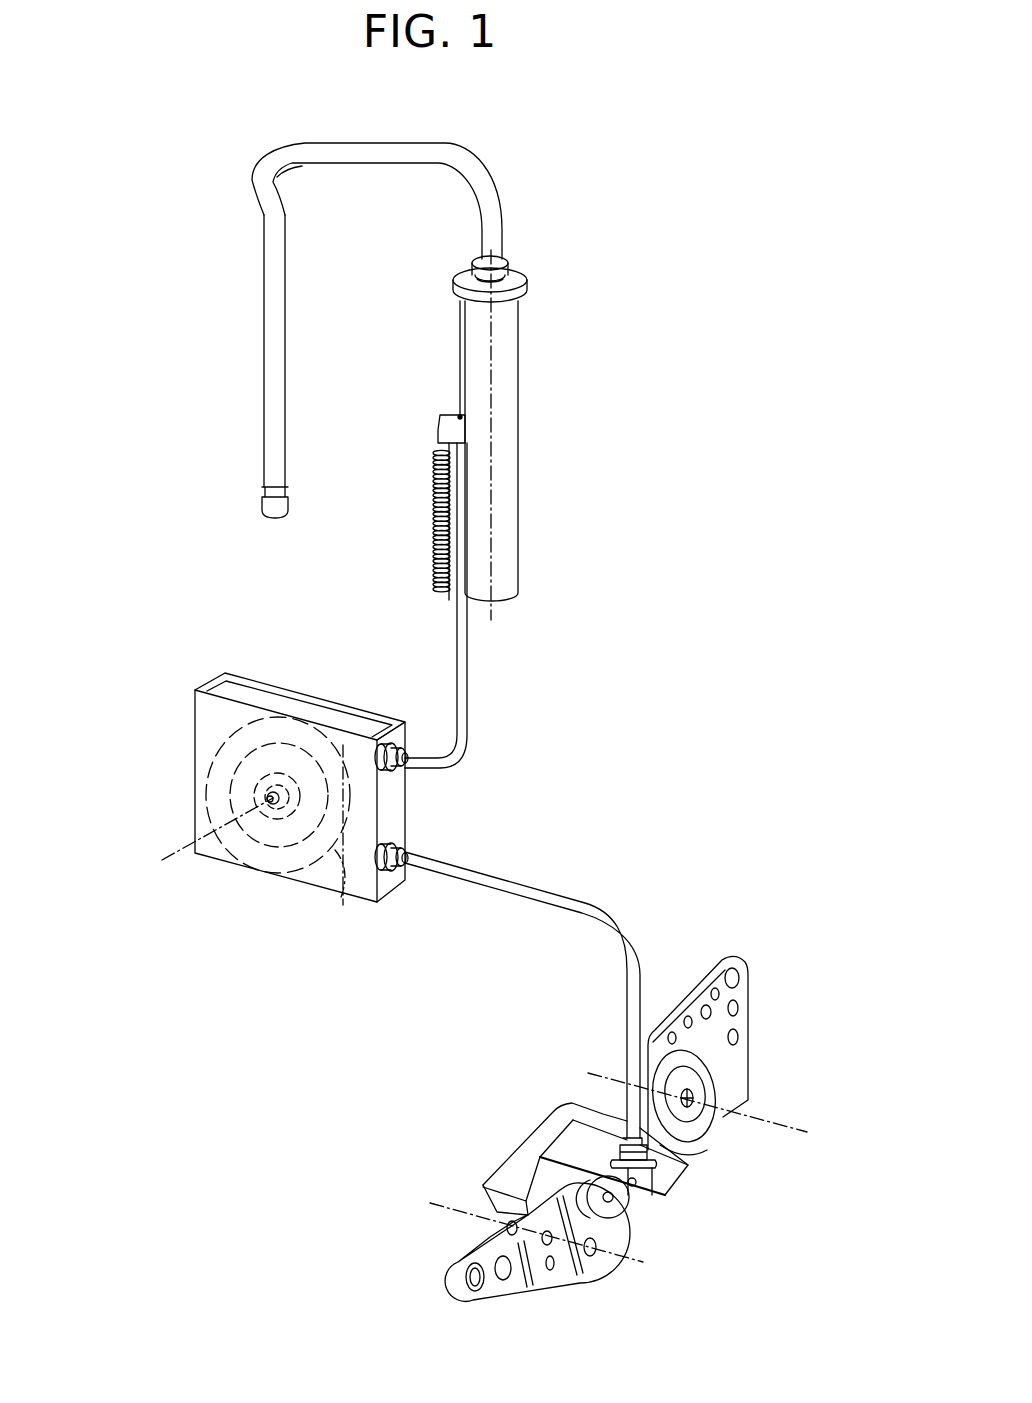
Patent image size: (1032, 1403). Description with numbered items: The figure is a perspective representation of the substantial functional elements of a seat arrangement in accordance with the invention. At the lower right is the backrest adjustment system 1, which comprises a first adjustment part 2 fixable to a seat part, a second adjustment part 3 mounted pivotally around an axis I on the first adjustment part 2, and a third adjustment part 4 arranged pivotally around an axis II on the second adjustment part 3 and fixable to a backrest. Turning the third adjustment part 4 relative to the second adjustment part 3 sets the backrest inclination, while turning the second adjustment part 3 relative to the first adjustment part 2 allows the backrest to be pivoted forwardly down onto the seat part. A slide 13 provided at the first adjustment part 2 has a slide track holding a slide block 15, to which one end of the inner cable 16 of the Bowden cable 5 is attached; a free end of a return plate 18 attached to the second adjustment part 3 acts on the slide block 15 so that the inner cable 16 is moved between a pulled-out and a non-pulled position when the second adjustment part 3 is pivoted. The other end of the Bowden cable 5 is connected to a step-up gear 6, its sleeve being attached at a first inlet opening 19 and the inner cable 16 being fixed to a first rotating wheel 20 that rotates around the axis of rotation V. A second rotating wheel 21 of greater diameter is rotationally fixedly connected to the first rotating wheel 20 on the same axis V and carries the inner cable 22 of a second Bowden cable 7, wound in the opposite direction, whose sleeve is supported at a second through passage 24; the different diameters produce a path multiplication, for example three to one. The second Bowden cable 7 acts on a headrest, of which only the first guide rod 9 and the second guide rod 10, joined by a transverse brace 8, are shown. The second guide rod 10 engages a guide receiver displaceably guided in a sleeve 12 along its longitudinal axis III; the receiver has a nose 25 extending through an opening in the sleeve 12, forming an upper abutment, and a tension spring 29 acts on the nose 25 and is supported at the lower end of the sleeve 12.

The backrest adjustment system 1 is at (752, 934).
The first adjustment part 2 is at (540, 1276).
The second adjustment part 3 is at (512, 1178).
The third adjustment part 4 is at (742, 986).
The Bowden cable 5 is at (500, 892).
The step-up gear 6 is at (196, 706).
The second Bowden cable 7 is at (468, 654).
The transverse brace 8 is at (376, 148).
The first guide rod 9 is at (270, 343).
The second guide rod 10 is at (505, 285).
The sleeve 12 is at (510, 392).
The slide 13 is at (625, 1203).
The slide block 15 is at (647, 1176).
The inner cable 16 is at (342, 900).
The return plate 18 is at (576, 1145).
The first inlet opening 19 is at (410, 870).
The first rotating wheel 20 is at (245, 797).
The second rotating wheel 21 is at (212, 754).
The inner cable of the second Bowden cable 22 is at (460, 347).
The second through passage 24 is at (410, 768).
The nose 25 is at (440, 432).
The tension spring 29 is at (434, 522).
The axis I is at (430, 1205).
The axis II is at (806, 1130).
The longitudinal axis III is at (508, 498).
The axis of rotation V is at (174, 863).